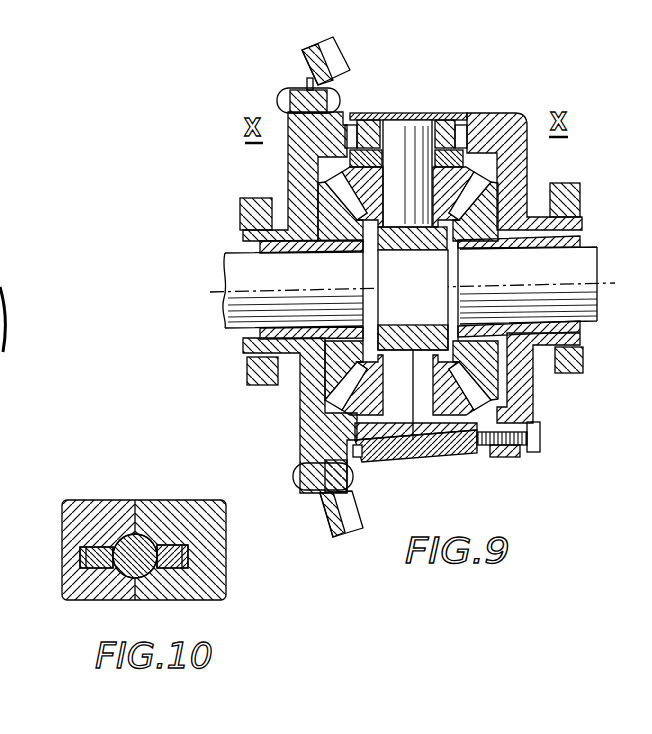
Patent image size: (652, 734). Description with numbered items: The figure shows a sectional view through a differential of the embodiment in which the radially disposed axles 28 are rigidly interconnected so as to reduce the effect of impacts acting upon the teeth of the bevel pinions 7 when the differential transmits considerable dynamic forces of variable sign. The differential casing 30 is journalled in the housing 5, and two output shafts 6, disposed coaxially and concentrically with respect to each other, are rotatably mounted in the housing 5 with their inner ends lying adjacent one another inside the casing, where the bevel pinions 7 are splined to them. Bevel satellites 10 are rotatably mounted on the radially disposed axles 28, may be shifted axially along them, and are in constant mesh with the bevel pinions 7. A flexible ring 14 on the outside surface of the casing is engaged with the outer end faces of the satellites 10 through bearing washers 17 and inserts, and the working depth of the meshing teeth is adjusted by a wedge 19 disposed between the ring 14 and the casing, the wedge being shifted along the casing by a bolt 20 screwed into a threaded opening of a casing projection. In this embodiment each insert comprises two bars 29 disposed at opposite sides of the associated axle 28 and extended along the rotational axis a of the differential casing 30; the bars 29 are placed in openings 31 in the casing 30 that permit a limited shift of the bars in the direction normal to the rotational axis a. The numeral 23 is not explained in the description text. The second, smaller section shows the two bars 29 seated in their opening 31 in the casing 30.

In FIG. 9, the housing 5 is at (247, 372).
In FIG. 9, the output shaft 6 is at (228, 305).
In FIG. 9, the bevel pinion 7 is at (330, 380).
In FIG. 9, the bevel satellite 10 is at (513, 167).
In FIG. 9, the ring 14 is at (398, 112).
In FIG. 9, the bearing washer 17 is at (347, 163).
In FIG. 9, the wedge 19 is at (453, 458).
In FIG. 9, the bolt 20 is at (540, 441).
In FIG. 9, the gear 23 is at (0, 273).
In FIG. 9, the radially disposed axle 28 is at (425, 114).
In FIG. 9, the bar 29 is at (371, 118).
In FIG. 10, the bar 29 is at (80, 558).
In FIG. 9, the differential casing 30 is at (524, 110).
In FIG. 10, the differential casing 30 is at (97, 603).
In FIG. 10, the opening 31 is at (195, 558).
In FIG. 9, the rotational axis a is at (583, 283).